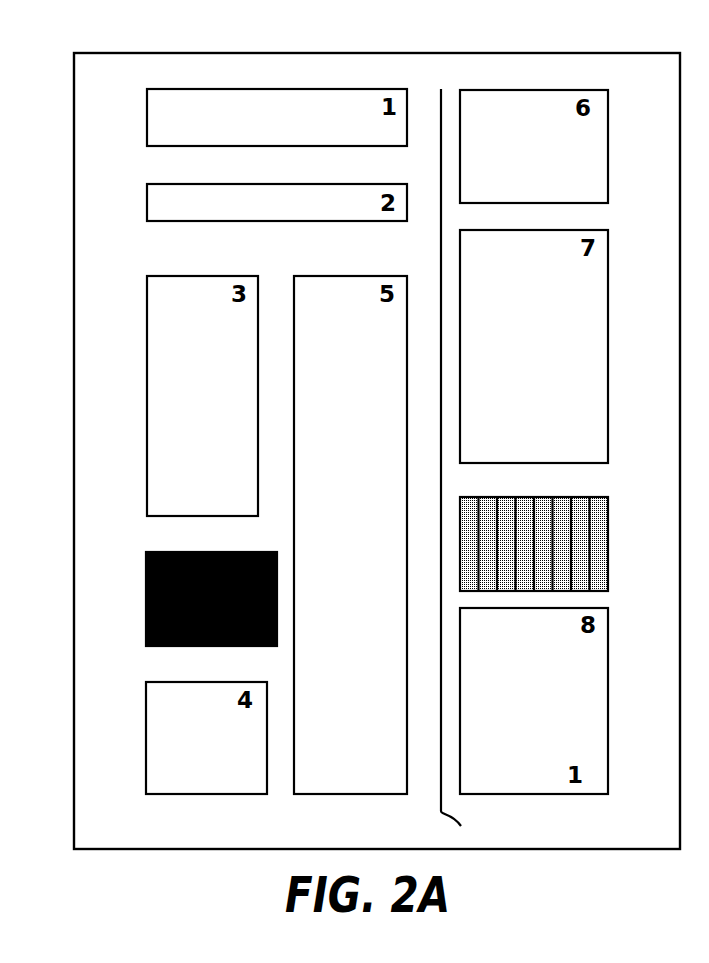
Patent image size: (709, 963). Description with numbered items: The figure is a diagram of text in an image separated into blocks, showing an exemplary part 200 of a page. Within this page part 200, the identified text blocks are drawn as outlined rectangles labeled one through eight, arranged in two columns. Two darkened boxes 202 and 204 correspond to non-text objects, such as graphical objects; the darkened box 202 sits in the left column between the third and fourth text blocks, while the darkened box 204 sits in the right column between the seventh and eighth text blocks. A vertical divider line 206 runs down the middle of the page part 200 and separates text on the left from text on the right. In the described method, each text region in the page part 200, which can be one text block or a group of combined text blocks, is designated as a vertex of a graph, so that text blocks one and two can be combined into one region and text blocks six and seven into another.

The part of a page 200 is at (380, 53).
The darkened box 202 is at (146, 598).
The darkened box 204 is at (608, 545).
The vertical divider line 206 is at (477, 462).